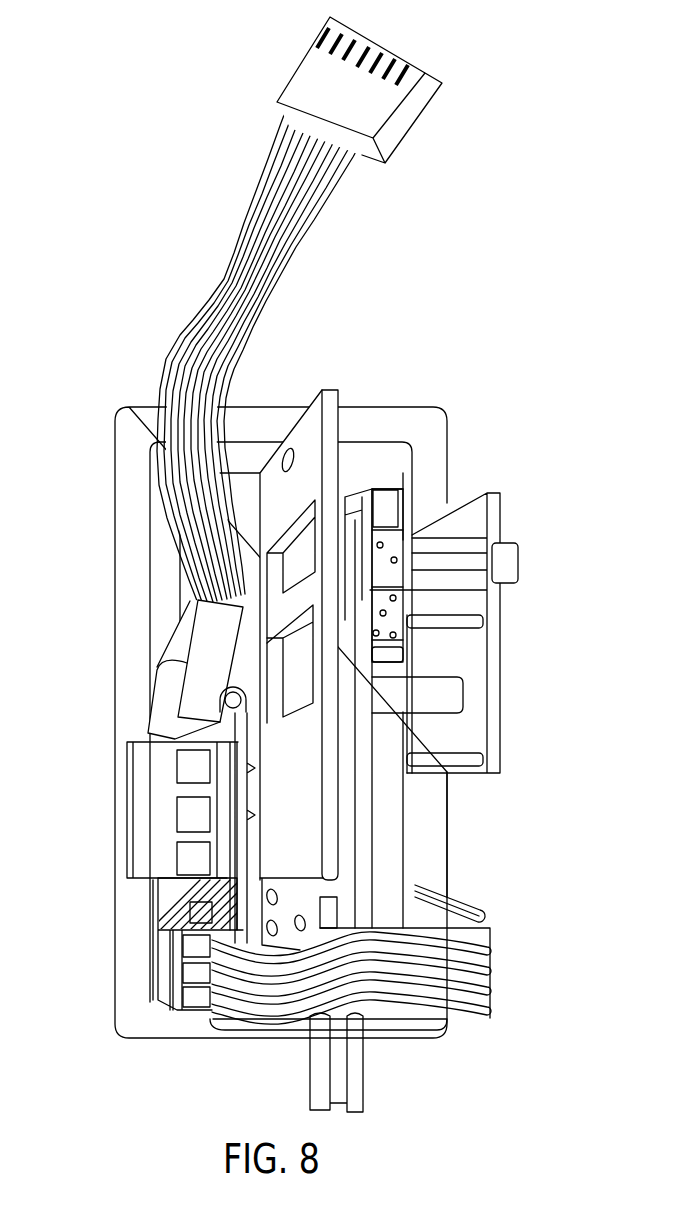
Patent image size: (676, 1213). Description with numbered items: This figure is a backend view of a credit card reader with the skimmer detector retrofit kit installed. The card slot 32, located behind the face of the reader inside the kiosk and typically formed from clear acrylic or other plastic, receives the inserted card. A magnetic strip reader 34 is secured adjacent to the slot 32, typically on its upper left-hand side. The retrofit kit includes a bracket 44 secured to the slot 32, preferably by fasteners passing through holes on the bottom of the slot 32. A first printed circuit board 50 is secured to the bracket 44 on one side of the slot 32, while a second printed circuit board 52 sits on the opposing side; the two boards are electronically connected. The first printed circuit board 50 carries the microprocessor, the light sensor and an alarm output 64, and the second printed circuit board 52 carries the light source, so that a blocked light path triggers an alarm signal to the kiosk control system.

The slot 32 is at (345, 497).
The magnetic strip reader 34 is at (505, 517).
The bracket 44 is at (363, 1072).
The first printed circuit board 50 is at (192, 903).
The second printed circuit board 52 is at (486, 918).
The alarm output 64 is at (127, 790).